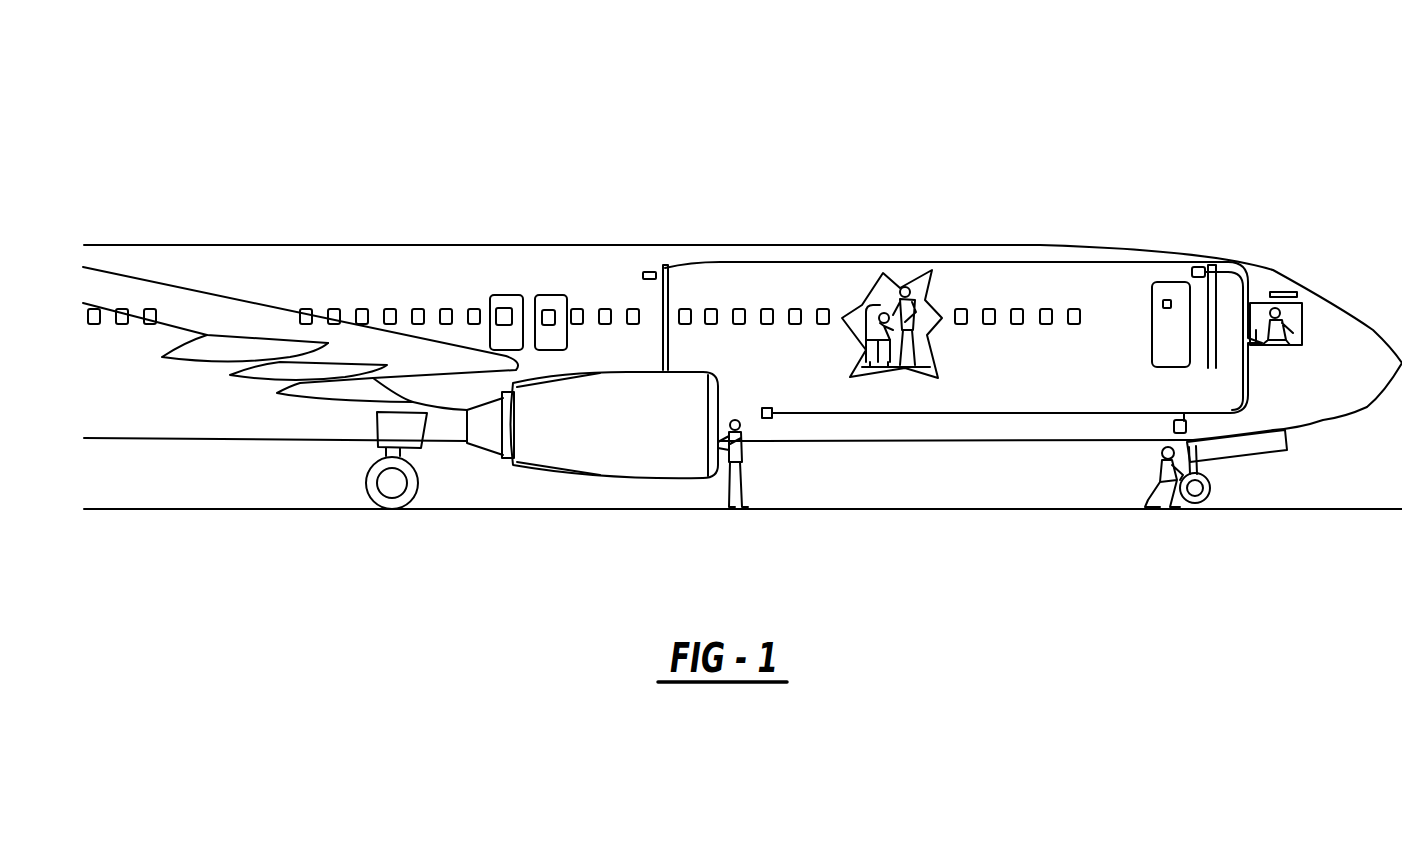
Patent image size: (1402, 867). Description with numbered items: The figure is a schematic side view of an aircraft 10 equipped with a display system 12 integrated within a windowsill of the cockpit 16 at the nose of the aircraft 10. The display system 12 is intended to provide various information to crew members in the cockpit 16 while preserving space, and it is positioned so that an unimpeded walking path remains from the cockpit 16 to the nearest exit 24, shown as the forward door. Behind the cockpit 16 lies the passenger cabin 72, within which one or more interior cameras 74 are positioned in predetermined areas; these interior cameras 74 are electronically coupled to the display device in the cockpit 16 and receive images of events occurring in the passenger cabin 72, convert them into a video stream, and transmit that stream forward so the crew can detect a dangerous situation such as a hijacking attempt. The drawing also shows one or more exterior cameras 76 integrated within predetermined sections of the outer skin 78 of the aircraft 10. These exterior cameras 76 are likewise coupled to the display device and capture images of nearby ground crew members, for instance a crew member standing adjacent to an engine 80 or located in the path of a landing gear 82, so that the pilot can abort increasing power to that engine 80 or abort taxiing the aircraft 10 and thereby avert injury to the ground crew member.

The aircraft 10 is at (407, 121).
The display system 12 is at (1312, 307).
The cockpit 16 is at (1262, 268).
The exit 24 is at (1152, 283).
The passenger cabin 72 is at (617, 242).
The interior camera 74 is at (648, 272).
The exterior camera 76 is at (766, 408).
The outer skin 78 is at (779, 442).
The engine 80 is at (663, 480).
The landing gear 82 is at (1213, 490).